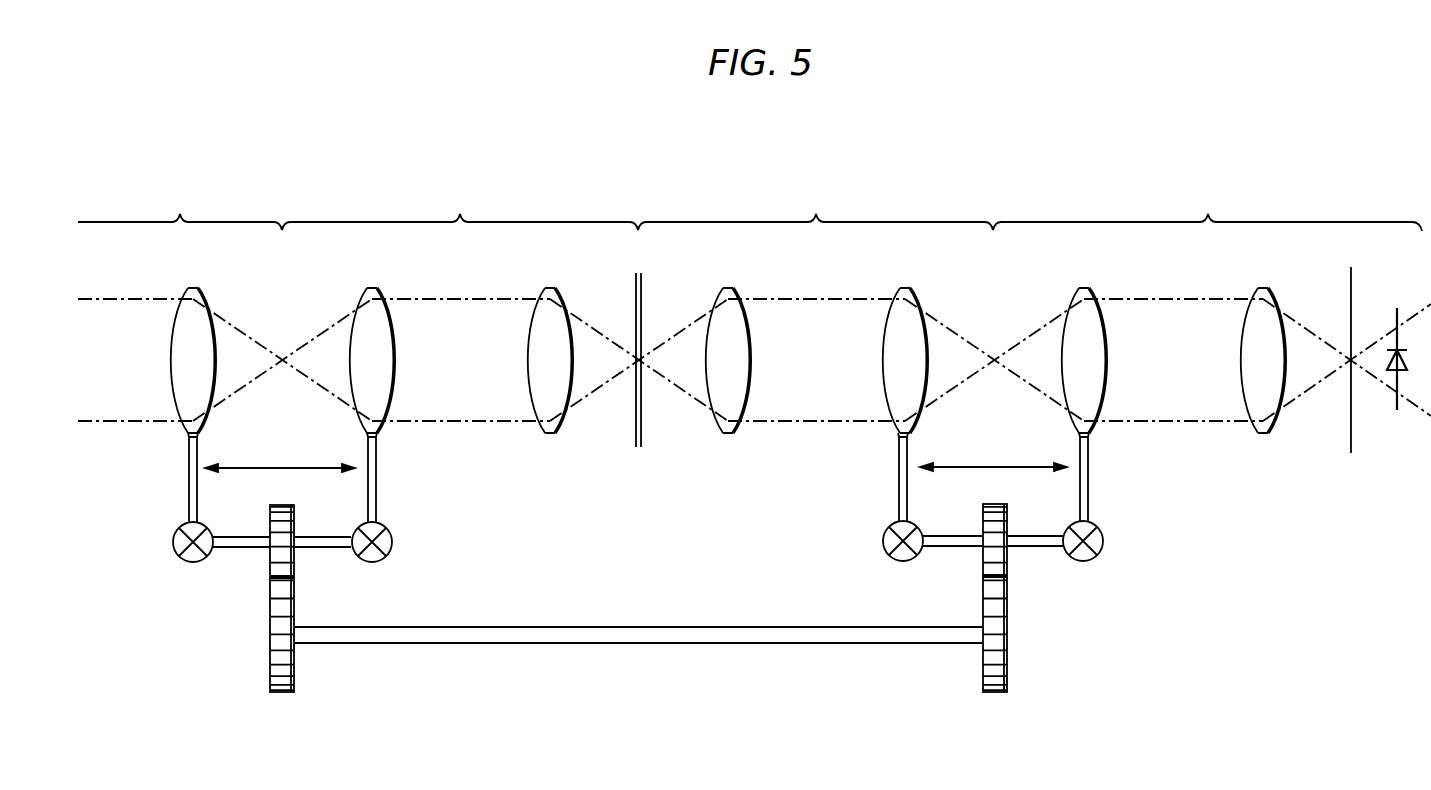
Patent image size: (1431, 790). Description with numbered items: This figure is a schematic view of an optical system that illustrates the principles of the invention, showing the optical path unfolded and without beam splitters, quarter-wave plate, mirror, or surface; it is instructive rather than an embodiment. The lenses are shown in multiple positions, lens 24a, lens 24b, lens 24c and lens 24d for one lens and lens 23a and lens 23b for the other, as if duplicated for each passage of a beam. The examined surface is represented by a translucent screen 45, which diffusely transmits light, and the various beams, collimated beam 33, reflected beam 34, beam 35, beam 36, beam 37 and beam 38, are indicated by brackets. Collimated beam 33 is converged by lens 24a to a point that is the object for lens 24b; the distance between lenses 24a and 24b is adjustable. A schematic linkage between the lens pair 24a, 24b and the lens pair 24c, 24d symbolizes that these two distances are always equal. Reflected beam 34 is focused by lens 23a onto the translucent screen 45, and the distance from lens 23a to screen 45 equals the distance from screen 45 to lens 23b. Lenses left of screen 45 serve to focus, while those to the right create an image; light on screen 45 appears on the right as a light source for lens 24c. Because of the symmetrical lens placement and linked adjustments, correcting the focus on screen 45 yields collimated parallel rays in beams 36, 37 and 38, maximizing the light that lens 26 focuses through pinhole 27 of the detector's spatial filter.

The collimated beam 33 is at (207, 305).
The reflected beam 34 is at (461, 305).
The beam 35 is at (817, 305).
The beam 36 is at (1212, 315).
The beam 37 is at (1212, 345).
The beam 38 is at (1212, 345).
The lens 24a is at (190, 289).
The lens 24b is at (369, 289).
The lens 24c is at (902, 288).
The lens 24d is at (1081, 288).
The lens 23a is at (548, 288).
The lens 23b is at (732, 288).
The lens 26 is at (1258, 288).
The pinhole 27 is at (1342, 378).
The translucent screen 45 is at (628, 426).